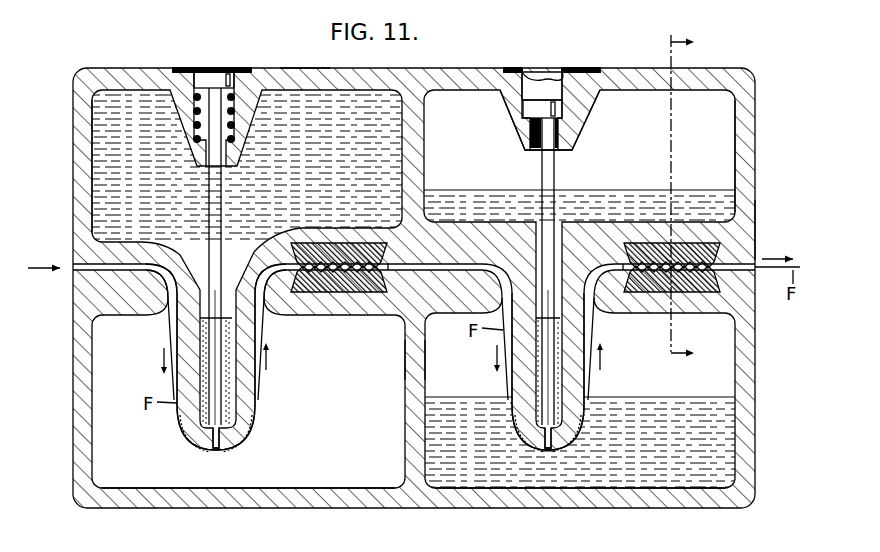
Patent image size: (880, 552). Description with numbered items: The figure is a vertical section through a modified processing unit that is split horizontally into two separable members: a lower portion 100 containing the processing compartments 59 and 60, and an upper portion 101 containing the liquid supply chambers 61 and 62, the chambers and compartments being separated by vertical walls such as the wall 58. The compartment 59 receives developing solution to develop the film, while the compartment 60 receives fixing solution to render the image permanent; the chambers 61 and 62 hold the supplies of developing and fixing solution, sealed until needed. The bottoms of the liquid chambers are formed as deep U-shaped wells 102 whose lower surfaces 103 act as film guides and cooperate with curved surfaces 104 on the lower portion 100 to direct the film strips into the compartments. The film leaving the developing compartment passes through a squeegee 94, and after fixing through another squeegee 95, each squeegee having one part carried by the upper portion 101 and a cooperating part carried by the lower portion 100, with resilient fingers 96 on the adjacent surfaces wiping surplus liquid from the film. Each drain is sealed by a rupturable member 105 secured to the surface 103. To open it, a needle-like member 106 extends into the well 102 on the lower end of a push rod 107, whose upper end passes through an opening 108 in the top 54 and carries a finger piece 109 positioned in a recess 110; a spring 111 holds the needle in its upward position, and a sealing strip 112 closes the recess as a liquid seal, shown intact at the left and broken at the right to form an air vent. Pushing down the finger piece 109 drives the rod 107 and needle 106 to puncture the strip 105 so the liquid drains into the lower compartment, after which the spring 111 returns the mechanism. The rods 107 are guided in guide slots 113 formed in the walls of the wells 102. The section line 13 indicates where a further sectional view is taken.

The section line 13- 13 is at (697, 198).
The top 54 is at (308, 78).
The vertically aligned wall 58 is at (417, 368).
The processing compartment 59 is at (152, 480).
The processing compartment 60 is at (467, 485).
The liquid supply chamber 61 is at (100, 186).
The liquid supply chamber 62 is at (730, 180).
The squeegee 94 is at (352, 290).
The squeegee 95 is at (692, 290).
The resilient fingers 96 is at (323, 293).
The lower portion 100 is at (754, 392).
The upper portion 101 is at (746, 232).
The U-shaped well 102 is at (232, 400).
The lower surface 103 is at (192, 442).
The curved surface 104 is at (152, 292).
The rupturable member 105 is at (247, 432).
The needle-like member 106 is at (208, 413).
The push rod 107 is at (210, 88).
The opening 108 is at (528, 154).
The finger piece 109 is at (222, 72).
The recess 110 is at (558, 96).
The spring 111 is at (236, 95).
The sealing strip 112 is at (188, 68).
The guide slot 113 is at (215, 450).